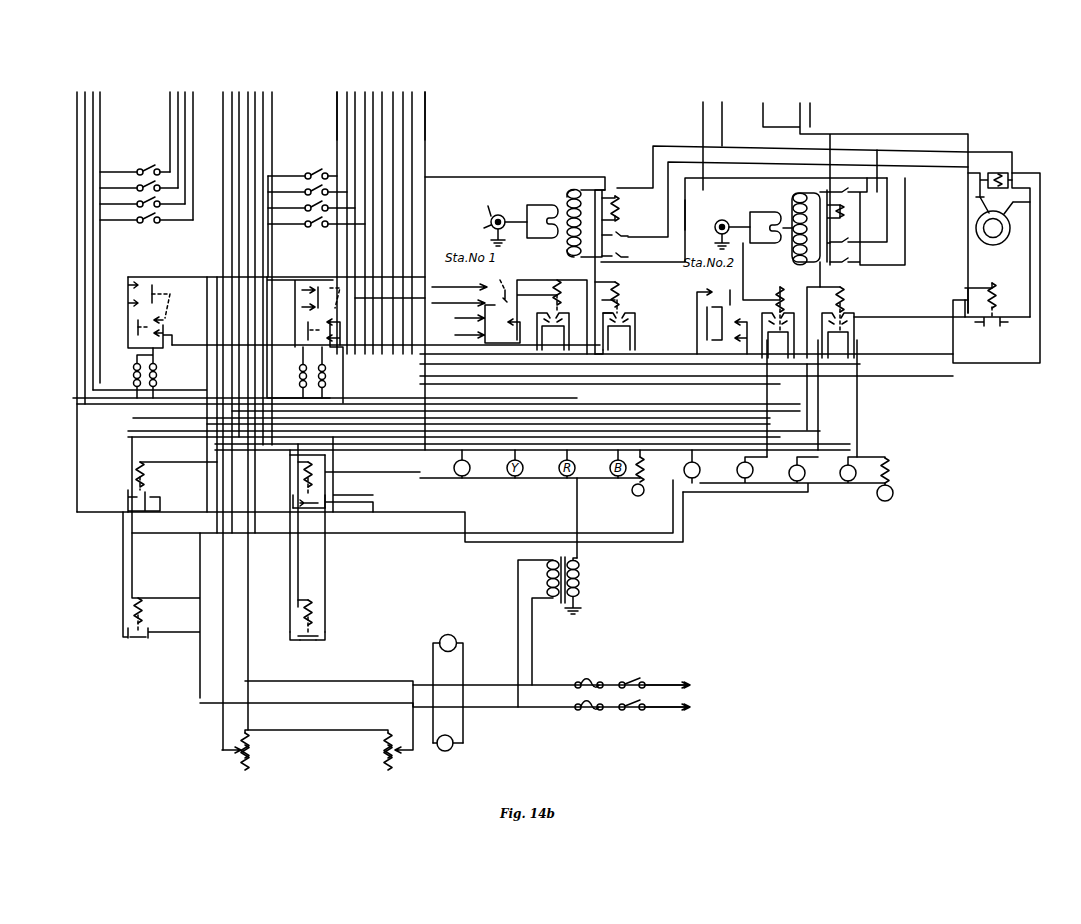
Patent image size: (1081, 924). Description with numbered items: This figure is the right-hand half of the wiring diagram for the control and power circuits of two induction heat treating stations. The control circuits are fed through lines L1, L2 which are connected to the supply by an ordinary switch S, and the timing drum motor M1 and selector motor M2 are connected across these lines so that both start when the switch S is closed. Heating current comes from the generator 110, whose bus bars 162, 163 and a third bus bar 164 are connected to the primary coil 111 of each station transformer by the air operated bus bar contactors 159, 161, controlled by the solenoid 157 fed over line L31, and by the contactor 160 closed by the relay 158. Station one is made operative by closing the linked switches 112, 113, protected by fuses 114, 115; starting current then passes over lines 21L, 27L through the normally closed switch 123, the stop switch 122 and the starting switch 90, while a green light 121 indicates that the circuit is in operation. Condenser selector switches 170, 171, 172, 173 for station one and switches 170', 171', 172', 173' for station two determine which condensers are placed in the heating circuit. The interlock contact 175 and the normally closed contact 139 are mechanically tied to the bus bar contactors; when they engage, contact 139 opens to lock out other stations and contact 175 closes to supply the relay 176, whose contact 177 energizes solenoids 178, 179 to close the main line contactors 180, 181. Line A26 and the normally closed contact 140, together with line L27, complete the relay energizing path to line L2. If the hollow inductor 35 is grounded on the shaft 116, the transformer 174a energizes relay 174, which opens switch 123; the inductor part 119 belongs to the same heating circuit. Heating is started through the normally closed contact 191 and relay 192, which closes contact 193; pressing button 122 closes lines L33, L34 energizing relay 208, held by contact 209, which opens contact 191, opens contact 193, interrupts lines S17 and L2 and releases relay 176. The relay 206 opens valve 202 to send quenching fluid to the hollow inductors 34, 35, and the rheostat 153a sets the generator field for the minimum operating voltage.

The switch 170' is at (135, 165).
The switch 171' is at (139, 182).
The switch 172' is at (142, 198).
The switch 173' is at (146, 214).
The switch 170 is at (302, 168).
The switch 171 is at (307, 186).
The switch 172 is at (311, 202).
The switch 173 is at (316, 218).
The line 21L is at (333, 143).
The line 27L is at (427, 135).
The line L31 is at (515, 171).
The line L1 is at (334, 256).
The line L2 is at (330, 630).
The line L27 is at (686, 361).
The line L33 is at (296, 486).
The line L34 is at (342, 500).
The shaft 116 is at (498, 216).
The hollow inductor 34 is at (488, 206).
The hollow inductor 35 is at (484, 228).
The inductor part 119 is at (557, 200).
The primary coil 111 is at (598, 182).
The solenoid 157 is at (624, 210).
The contactor 160 is at (624, 231).
The bus bar contactor 161 is at (625, 256).
The bus bar 162 is at (652, 147).
The bus bar contactor 159 is at (618, 186).
The bus bar 163 is at (685, 189).
The third bus bar 164 is at (685, 206).
The relay 158 is at (623, 283).
The interlock contact 175 is at (621, 312).
The normally closed contact 139 is at (637, 323).
The normally closed contact 140 is at (854, 331).
The solenoid 178 is at (988, 182).
The solenoid 179 is at (1002, 173).
The main line contactor 180 is at (978, 199).
The main line contactor 181 is at (1031, 206).
The generator 110 is at (993, 244).
The relay 176 is at (1000, 297).
The contact 177 is at (984, 328).
The line A26 is at (682, 380).
The starting switch 90 is at (503, 272).
The relay 174 is at (555, 284).
The stop switch 122 is at (479, 328).
The normally closed switch 123 is at (535, 318).
The switch 112 is at (309, 299).
The switch 113 is at (302, 332).
The fuse 114 is at (325, 378).
The fuse 115 is at (300, 378).
The green light 121 is at (455, 469).
The relay 206 is at (645, 469).
The valve 202 is at (633, 489).
The relay 208 is at (298, 467).
The contact 209 is at (296, 499).
The normally closed contact 191 is at (296, 512).
The relay 192 is at (318, 606).
The line S17 is at (292, 618).
The contact 193 is at (298, 641).
The rheostat 153a is at (385, 752).
The timing drum motor M1 is at (459, 638).
The selector motor M2 is at (453, 752).
The switch S is at (636, 670).
The transformer 174a is at (583, 592).